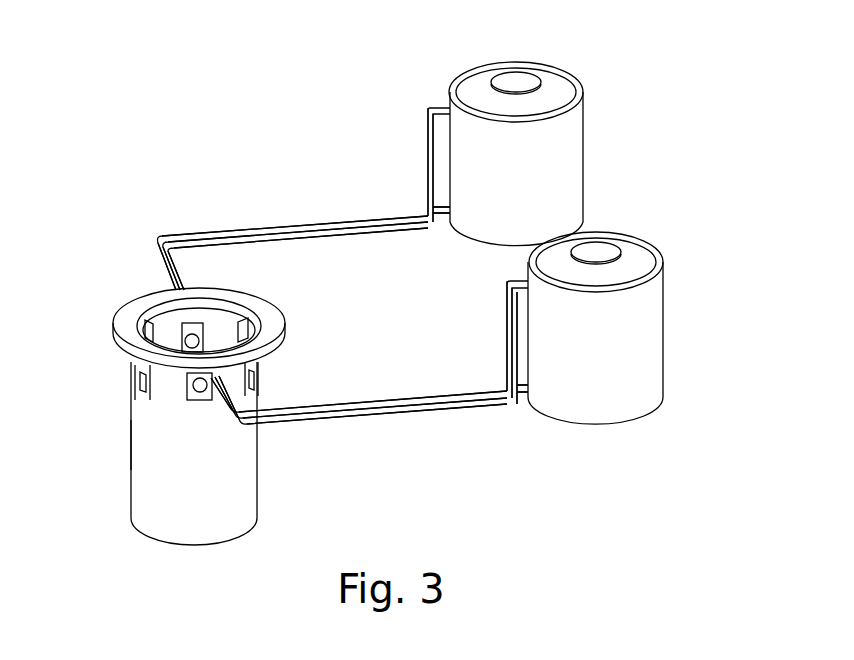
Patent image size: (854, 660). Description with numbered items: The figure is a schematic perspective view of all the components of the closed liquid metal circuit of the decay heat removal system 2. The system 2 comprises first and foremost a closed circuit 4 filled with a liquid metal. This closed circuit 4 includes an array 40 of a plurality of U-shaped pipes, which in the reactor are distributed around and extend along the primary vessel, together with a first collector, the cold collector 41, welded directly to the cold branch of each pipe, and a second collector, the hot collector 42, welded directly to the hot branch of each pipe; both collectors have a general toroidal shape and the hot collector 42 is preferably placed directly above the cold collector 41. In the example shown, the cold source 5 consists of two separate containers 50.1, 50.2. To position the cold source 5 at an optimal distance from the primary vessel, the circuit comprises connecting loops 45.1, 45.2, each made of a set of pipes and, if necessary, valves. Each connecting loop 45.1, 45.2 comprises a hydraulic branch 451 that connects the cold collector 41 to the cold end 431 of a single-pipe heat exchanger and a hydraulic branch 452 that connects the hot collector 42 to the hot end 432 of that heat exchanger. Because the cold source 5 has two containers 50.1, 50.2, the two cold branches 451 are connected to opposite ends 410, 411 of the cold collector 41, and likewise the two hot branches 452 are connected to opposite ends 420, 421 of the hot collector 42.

The system 2 is at (177, 153).
The closed circuit 4 is at (187, 236).
The array 40 is at (148, 437).
The end of the cold collector 410 is at (155, 276).
The end of the cold collector 411 is at (212, 402).
The cold collector 41 is at (290, 356).
The hot collector 42 is at (278, 322).
The end of the hot collector 420 is at (198, 286).
The end of the hot collector 421 is at (252, 362).
The connecting loop 45.1 is at (258, 144).
The connecting loop 45.2 is at (380, 322).
The hydraulic branch 451 is at (310, 226).
The hydraulic branch 452 is at (372, 223).
The cold end of the single-pipe heat exchanger 431 is at (428, 176).
The hot end of the single-pipe heat exchanger 432 is at (446, 106).
The cold source 5 is at (703, 140).
The container 50.1 is at (556, 148).
The container 50.2 is at (607, 233).